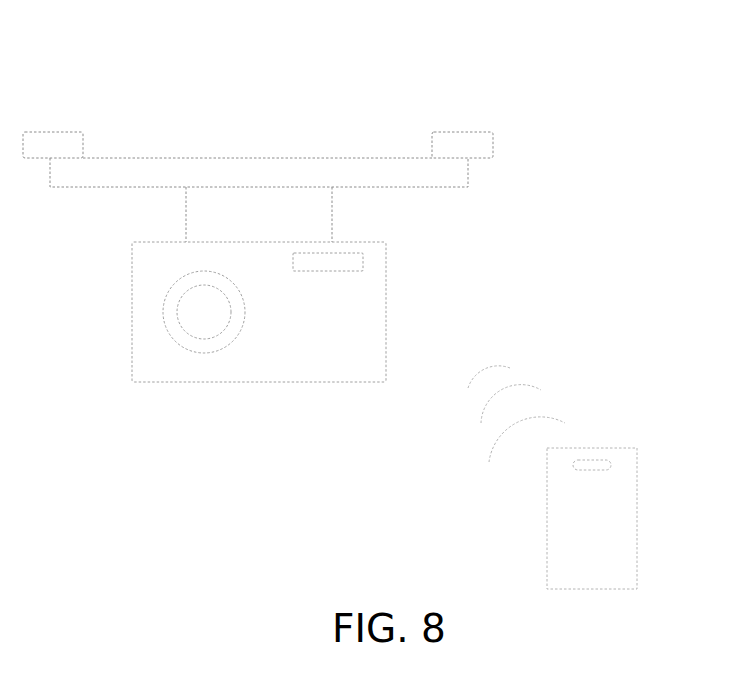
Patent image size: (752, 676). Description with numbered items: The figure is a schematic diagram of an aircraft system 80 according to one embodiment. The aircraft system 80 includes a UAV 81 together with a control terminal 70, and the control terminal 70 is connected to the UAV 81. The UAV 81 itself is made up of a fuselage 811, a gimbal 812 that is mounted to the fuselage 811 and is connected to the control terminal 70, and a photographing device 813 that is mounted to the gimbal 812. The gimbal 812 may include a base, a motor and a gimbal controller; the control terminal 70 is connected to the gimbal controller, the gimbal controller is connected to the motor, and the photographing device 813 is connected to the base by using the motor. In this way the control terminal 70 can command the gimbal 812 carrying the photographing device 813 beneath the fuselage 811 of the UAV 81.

The aircraft system 80 is at (425, 77).
The UAV 81 is at (600, 160).
The fuselage 811 is at (468, 173).
The gimbal 812 is at (297, 213).
The photographing device 813 is at (353, 324).
The control terminal 70 is at (620, 547).